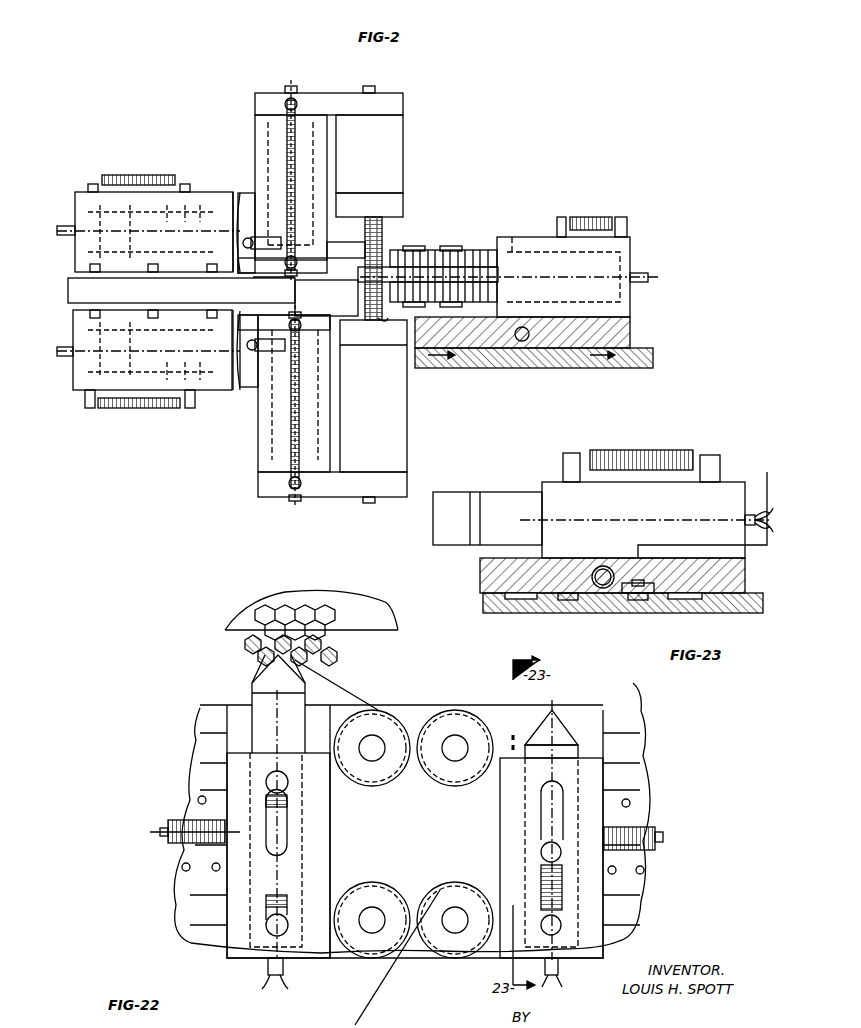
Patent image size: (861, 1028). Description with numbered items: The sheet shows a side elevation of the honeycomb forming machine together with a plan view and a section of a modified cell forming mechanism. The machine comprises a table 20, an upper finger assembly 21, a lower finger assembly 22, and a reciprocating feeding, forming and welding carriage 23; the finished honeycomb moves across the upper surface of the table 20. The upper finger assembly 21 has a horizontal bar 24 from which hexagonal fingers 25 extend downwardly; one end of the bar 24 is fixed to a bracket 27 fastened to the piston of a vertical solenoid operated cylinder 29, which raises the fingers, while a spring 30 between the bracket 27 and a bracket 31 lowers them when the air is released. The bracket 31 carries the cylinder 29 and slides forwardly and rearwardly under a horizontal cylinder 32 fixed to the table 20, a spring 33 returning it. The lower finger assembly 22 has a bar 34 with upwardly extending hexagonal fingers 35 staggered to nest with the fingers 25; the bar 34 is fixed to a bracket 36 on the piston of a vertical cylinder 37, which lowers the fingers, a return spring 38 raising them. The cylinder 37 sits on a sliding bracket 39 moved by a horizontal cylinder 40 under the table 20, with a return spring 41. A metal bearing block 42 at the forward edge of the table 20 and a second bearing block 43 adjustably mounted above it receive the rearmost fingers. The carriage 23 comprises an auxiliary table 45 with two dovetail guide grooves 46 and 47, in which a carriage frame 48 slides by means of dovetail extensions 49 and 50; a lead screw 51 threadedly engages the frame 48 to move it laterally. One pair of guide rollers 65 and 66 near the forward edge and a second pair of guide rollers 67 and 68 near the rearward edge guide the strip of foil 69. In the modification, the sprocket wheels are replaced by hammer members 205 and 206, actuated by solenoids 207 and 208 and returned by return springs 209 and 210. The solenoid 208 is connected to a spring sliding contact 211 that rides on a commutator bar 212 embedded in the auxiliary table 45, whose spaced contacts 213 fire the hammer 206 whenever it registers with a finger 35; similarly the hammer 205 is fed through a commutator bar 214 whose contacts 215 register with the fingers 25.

In FIG. 2, the table 20 is at (68, 294).
In FIG. 2, the upper finger assembly 21 is at (408, 166).
In FIG. 2, the lower finger assembly 22 is at (408, 428).
In FIG. 2, the carriage 23 is at (505, 236).
In FIG. 23, the carriage 23 is at (553, 480).
In FIG. 22, the carriage 23 is at (345, 960).
In FIG. 2, the bar 24 is at (404, 210).
In FIG. 2, the hexagonal fingers 25 is at (384, 244).
In FIG. 22, the hexagonal fingers 25 is at (246, 642).
In FIG. 2, the bracket 27 is at (323, 94).
In FIG. 2, the solenoid operated cylinder 29 is at (255, 130).
In FIG. 2, the spring 30 is at (300, 172).
In FIG. 2, the bracket 31 is at (260, 270).
In FIG. 2, the solenoid cylinder 32 is at (145, 188).
In FIG. 2, the spring 33 is at (118, 172).
In FIG. 2, the bar 34 is at (392, 340).
In FIG. 2, the hexagonal fingers 35 is at (392, 318).
In FIG. 22, the hexagonal fingers 35 is at (316, 630).
In FIG. 2, the bracket 36 is at (408, 464).
In FIG. 2, the solenoid operated cylinder 37 is at (264, 436).
In FIG. 2, the return spring 38 is at (292, 406).
In FIG. 2, the bracket 39 is at (242, 388).
In FIG. 2, the solenoid operated cylinder 40 is at (150, 390).
In FIG. 2, the return spring 41 is at (118, 408).
In FIG. 2, the bearing block 42 is at (326, 298).
In FIG. 2, the second bearing block 43 is at (342, 244).
In FIG. 2, the auxiliary carriage table 45 is at (552, 370).
In FIG. 23, the auxiliary carriage table 45 is at (772, 584).
In FIG. 22, the auxiliary carriage table 45 is at (632, 786).
In FIG. 2, the dovetail guide groove 46 is at (456, 358).
In FIG. 23, the dovetail guide groove 46 is at (519, 602).
In FIG. 22, the dovetail guide groove 46 is at (628, 756).
In FIG. 2, the dovetail guide groove 47 is at (610, 364).
In FIG. 23, the dovetail guide groove 47 is at (682, 602).
In FIG. 22, the dovetail guide groove 47 is at (618, 936).
In FIG. 2, the carriage frame 48 is at (626, 338).
In FIG. 23, the carriage frame 48 is at (612, 575).
In FIG. 2, the dovetail extension 49 is at (438, 356).
In FIG. 2, the dovetail extension 50 is at (592, 358).
In FIG. 2, the lead screw 51 is at (520, 342).
In FIG. 23, the lead screw 51 is at (604, 588).
In FIG. 22, the lead screw 51 is at (658, 834).
In FIG. 22, the guide roller 65 is at (470, 887).
In FIG. 22, the guide roller 66 is at (384, 887).
In FIG. 22, the guide roller 67 is at (464, 786).
In FIG. 22, the guide roller 68 is at (380, 774).
In FIG. 22, the strip of foil 69 is at (364, 986).
In FIG. 22, the hammer member 205 is at (252, 696).
In FIG. 23, the hammer member 206 is at (488, 492).
In FIG. 22, the hammer member 206 is at (562, 722).
In FIG. 22, the solenoid 207 is at (318, 848).
In FIG. 23, the solenoid 208 is at (739, 482).
In FIG. 22, the solenoid 208 is at (500, 838).
In FIG. 22, the return spring 209 is at (286, 898).
In FIG. 23, the return spring 210 is at (684, 448).
In FIG. 22, the return spring 210 is at (560, 900).
In FIG. 23, the spring sliding contact 211 is at (654, 600).
In FIG. 23, the commutator bar 212 is at (640, 604).
In FIG. 22, the commutator bar 212 is at (642, 871).
In FIG. 22, the contacts 213 is at (214, 870).
In FIG. 23, the commutator bar 214 is at (570, 604).
In FIG. 22, the commutator bar 214 is at (178, 798).
In FIG. 22, the contacts 215 is at (198, 800).